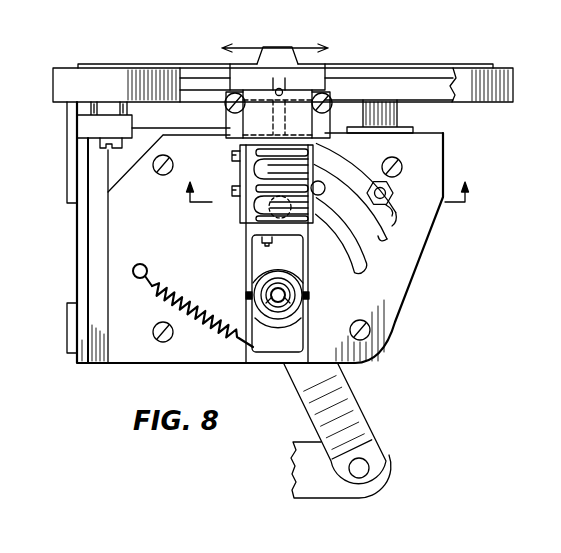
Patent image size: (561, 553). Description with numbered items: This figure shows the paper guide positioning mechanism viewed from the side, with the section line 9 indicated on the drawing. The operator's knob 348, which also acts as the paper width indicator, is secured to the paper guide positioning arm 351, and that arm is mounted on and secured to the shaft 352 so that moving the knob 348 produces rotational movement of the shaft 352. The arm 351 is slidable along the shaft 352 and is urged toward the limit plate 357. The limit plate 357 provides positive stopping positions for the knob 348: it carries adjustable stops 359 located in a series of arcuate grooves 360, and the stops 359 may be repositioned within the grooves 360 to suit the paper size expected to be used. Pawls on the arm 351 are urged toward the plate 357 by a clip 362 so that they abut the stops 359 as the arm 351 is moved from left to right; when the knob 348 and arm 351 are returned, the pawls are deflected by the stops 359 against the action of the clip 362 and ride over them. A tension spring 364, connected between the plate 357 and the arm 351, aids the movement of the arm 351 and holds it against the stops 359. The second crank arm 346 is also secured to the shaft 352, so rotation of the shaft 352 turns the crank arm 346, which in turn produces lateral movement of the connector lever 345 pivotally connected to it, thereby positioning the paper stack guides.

The knob 348 is at (278, 47).
The section line 9- 9 is at (328, 182).
The adjustable stops 359 is at (385, 164).
The arcuate grooves 360 is at (364, 263).
The clip 362 is at (242, 219).
The paper guide positioning arm 351 is at (251, 262).
The shaft 352 is at (300, 299).
The tension spring 364 is at (163, 298).
The limit plate 357 is at (413, 273).
The second crank arm 346 is at (294, 395).
The connector lever 345 is at (294, 488).